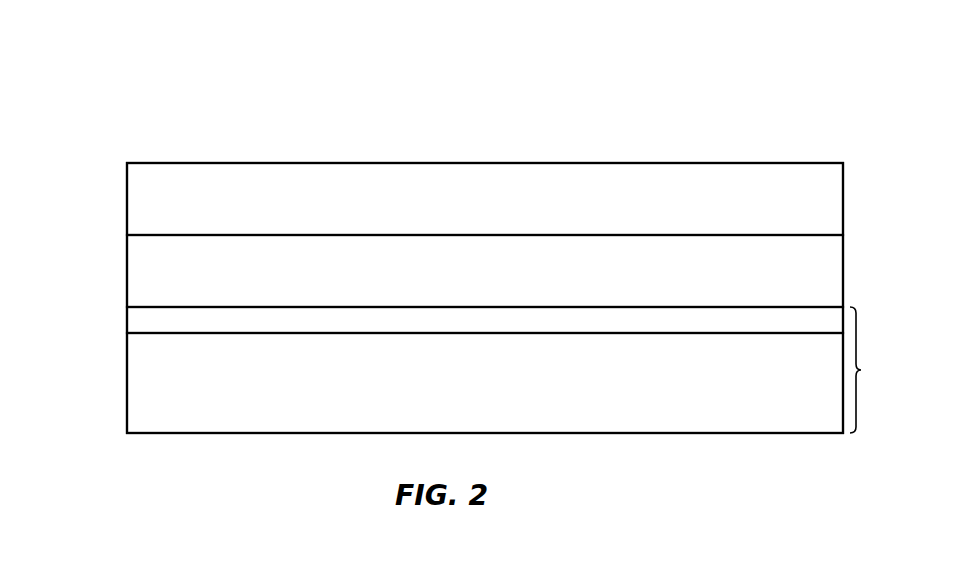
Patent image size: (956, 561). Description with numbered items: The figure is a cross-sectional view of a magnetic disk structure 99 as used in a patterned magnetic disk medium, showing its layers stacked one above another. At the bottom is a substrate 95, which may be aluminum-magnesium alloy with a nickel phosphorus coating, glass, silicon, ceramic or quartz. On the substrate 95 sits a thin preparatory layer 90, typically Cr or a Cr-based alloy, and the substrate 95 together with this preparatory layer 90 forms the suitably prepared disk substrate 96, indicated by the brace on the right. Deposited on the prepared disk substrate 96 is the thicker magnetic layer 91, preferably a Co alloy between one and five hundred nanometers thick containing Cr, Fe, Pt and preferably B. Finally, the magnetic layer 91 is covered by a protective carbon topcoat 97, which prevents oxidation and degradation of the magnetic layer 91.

The magnetic disk structure 99 is at (165, 111).
The protective carbon topcoat 97 is at (126, 197).
The magnetic layer 91 is at (126, 265).
The preparatory layer 90 is at (126, 318).
The substrate 95 is at (126, 395).
The suitably prepared disk substrate 96 is at (874, 370).